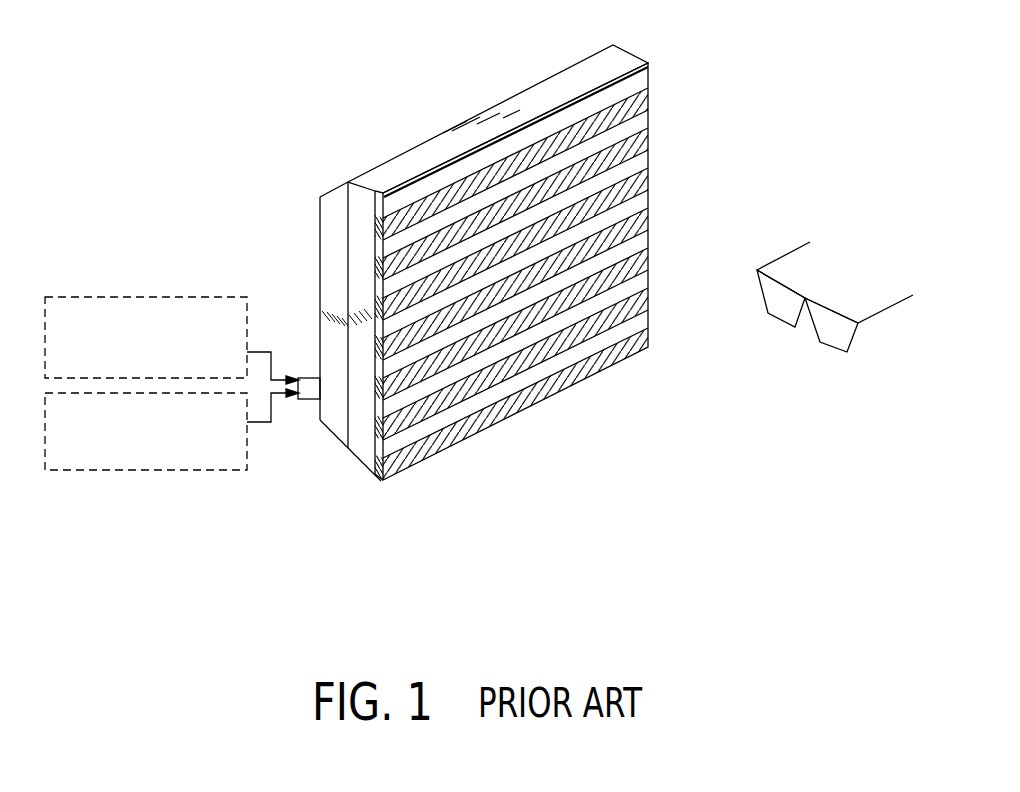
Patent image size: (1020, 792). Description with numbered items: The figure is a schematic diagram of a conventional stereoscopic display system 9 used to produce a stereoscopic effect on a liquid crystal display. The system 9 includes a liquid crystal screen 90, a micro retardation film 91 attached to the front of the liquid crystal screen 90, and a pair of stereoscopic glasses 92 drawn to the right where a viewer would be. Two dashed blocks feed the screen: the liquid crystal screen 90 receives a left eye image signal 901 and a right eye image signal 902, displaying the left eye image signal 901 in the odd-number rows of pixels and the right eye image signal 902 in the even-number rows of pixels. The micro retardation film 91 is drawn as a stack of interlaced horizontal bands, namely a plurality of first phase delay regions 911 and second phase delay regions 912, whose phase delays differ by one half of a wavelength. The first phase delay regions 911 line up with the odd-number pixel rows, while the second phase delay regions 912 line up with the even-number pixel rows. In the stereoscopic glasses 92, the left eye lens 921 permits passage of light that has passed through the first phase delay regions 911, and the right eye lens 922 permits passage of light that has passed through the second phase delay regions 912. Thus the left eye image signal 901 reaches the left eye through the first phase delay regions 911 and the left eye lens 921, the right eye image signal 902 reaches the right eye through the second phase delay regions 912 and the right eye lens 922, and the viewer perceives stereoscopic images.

The stereoscopic display system 9 is at (424, 108).
The liquid crystal screen 90 is at (362, 460).
The micro retardation film 91 is at (380, 481).
The first phase delay region 911 is at (643, 80).
The second phase delay region 912 is at (647, 136).
The left eye image signal 901 is at (145, 472).
The right eye image signal 902 is at (147, 295).
The stereoscopic glasses 92 is at (840, 247).
The left eye lens 921 is at (833, 338).
The right eye lens 922 is at (770, 303).